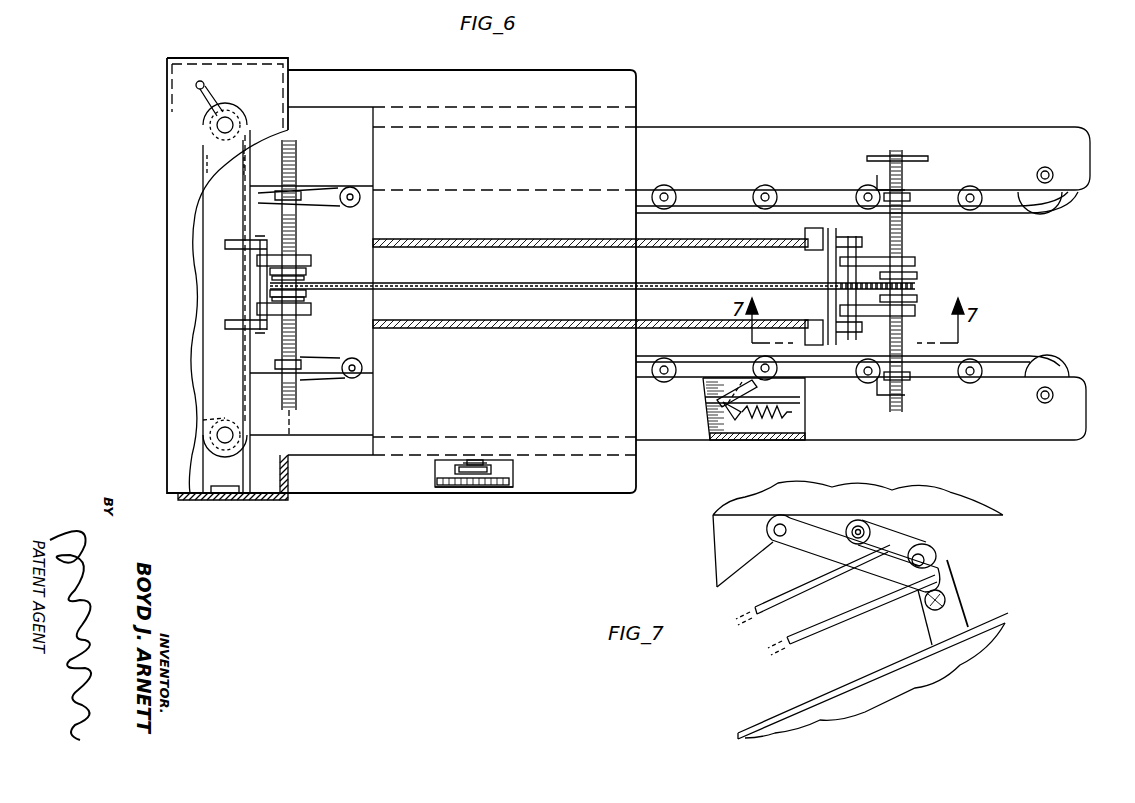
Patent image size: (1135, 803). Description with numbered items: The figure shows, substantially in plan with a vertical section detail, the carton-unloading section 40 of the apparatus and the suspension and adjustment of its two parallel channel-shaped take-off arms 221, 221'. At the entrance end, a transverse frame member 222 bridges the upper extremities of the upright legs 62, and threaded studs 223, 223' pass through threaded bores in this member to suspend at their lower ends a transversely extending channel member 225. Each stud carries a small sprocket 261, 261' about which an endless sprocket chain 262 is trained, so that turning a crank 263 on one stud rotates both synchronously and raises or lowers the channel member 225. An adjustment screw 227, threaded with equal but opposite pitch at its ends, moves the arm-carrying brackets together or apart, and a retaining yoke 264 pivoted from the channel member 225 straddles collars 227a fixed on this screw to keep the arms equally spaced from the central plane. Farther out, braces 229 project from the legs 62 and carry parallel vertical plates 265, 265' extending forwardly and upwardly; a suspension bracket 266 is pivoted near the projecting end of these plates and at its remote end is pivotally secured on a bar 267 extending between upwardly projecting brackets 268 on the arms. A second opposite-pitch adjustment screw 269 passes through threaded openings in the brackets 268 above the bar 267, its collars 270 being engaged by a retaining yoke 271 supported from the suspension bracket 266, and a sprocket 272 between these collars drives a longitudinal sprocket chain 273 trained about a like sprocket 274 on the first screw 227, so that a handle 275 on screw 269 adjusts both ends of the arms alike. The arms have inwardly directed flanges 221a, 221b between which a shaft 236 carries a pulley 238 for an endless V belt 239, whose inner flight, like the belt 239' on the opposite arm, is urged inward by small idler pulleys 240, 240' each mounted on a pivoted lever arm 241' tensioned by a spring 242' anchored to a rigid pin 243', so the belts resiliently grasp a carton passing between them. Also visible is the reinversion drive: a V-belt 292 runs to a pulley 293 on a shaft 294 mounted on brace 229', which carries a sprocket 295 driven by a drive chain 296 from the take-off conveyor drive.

In FIG. 6, the unloading section 40 is at (742, 98).
In FIG. 6, the legs 62 is at (255, 502).
In FIG. 6, the arm 221 is at (863, 147).
In FIG. 7, the arm 221 is at (886, 676).
In FIG. 6, the arm 221' is at (861, 422).
In FIG. 6, the flange 221a is at (705, 382).
In FIG. 6, the flange 221b is at (785, 440).
In FIG. 6, the transverse frame member 222 is at (167, 146).
In FIG. 6, the threaded stud 223 is at (174, 125).
In FIG. 6, the threaded stud 223' is at (171, 431).
In FIG. 6, the channel member 225 is at (212, 478).
In FIG. 6, the adjustment screw 227 is at (297, 156).
In FIG. 6, the collar 227a is at (300, 297).
In FIG. 6, the brace 229 is at (443, 265).
In FIG. 6, the brace 229' is at (480, 502).
In FIG. 6, the shaft 236 is at (1053, 173).
In FIG. 6, the pulley 238 is at (1050, 210).
In FIG. 6, the V belt 239 is at (857, 214).
In FIG. 6, the V belt 239' is at (852, 356).
In FIG. 6, the idler pulley 240 is at (817, 191).
In FIG. 6, the idler pulley 240' is at (817, 377).
In FIG. 6, the lever arm 241' is at (702, 398).
In FIG. 6, the spring 242' is at (795, 419).
In FIG. 6, the pin 243' is at (698, 419).
In FIG. 6, the sprocket 261 is at (184, 167).
In FIG. 6, the sprocket 261' is at (168, 404).
In FIG. 6, the sprocket chain 262 is at (205, 260).
In FIG. 6, the crank 263 is at (203, 80).
In FIG. 6, the retaining yoke 264 is at (303, 256).
In FIG. 6, the vertical plate 265 is at (598, 232).
In FIG. 6, the vertical plate 265' is at (598, 337).
In FIG. 7, the vertical plate 265' is at (716, 561).
In FIG. 6, the suspension bracket 266 is at (830, 264).
In FIG. 7, the suspension bracket 266 is at (872, 583).
In FIG. 7, the bar 267 is at (948, 602).
In FIG. 7, the bracket 268 is at (935, 630).
In FIG. 6, the adjustment screw 269 is at (905, 172).
In FIG. 7, the adjustment screw 269 is at (940, 566).
In FIG. 6, the collar 270 is at (915, 274).
In FIG. 7, the collar 270 is at (942, 550).
In FIG. 6, the retaining yoke 271 is at (912, 260).
In FIG. 7, the retaining yoke 271 is at (866, 522).
In FIG. 6, the sprocket 272 is at (918, 290).
In FIG. 6, the sprocket chain 273 is at (672, 283).
In FIG. 7, the sprocket chain 273 is at (780, 598).
In FIG. 6, the sprocket 274 is at (304, 277).
In FIG. 6, the handle 275 is at (925, 157).
In FIG. 6, the V-belt 292 is at (492, 469).
In FIG. 6, the pulley 293 is at (470, 460).
In FIG. 6, the shaft 294 is at (478, 460).
In FIG. 6, the sprocket 295 is at (510, 481).
In FIG. 6, the drive chain 296 is at (438, 470).